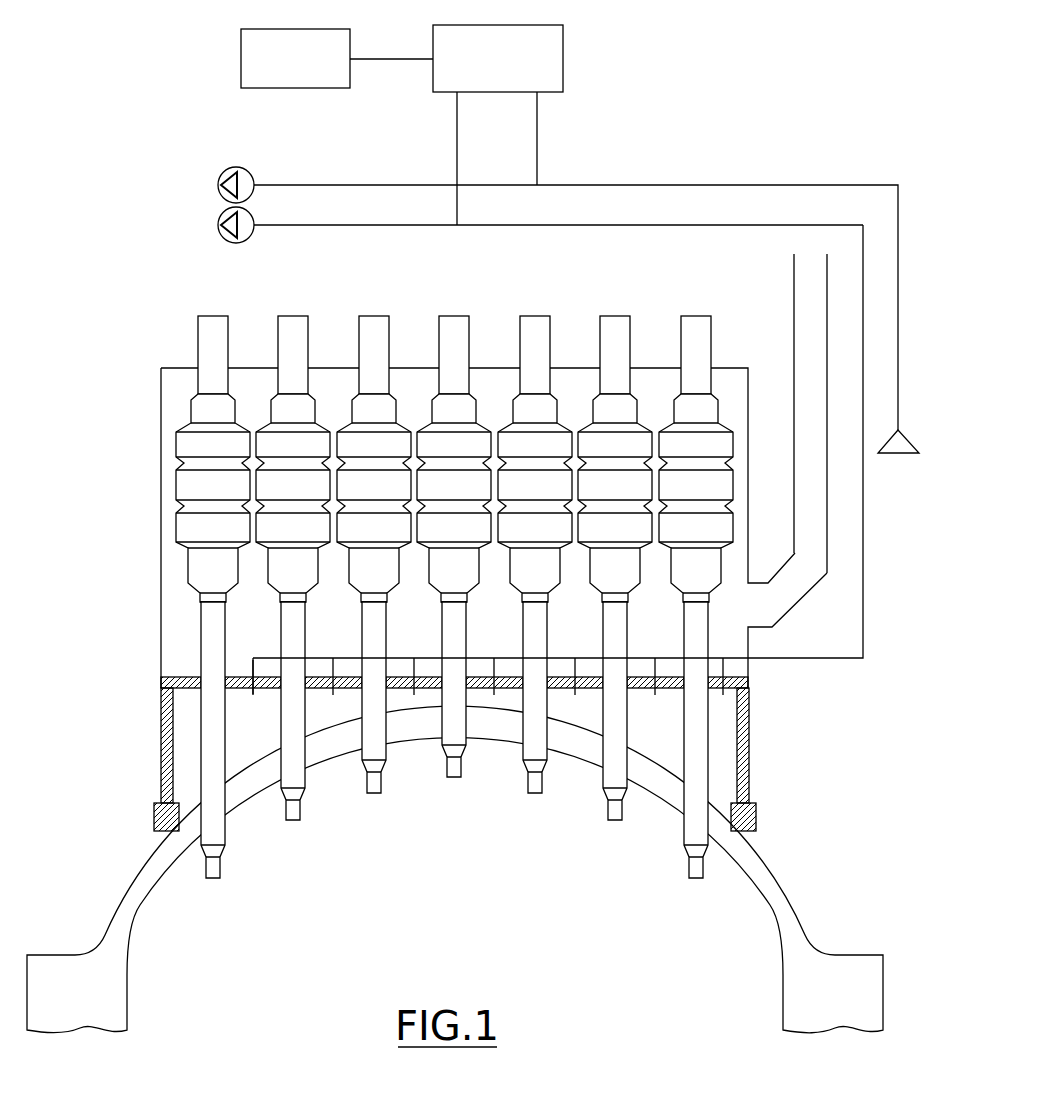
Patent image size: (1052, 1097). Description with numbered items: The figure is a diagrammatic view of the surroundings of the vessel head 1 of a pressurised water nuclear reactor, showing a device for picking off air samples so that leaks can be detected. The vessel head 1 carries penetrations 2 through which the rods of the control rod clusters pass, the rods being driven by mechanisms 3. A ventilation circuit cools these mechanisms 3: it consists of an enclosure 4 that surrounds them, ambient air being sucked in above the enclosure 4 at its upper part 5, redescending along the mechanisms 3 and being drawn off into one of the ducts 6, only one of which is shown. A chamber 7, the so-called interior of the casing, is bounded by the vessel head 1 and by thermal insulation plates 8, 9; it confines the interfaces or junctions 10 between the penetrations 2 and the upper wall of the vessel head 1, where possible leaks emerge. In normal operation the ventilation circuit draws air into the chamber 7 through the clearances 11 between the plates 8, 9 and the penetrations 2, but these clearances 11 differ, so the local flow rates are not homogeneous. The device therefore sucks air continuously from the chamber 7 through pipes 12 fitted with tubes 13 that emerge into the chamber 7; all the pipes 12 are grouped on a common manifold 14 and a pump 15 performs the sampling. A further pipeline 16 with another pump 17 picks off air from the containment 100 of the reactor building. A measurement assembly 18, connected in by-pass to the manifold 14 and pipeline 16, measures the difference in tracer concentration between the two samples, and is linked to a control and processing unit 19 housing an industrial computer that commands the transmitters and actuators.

The vessel head 1 is at (803, 888).
The penetrations 2 is at (296, 771).
The mechanisms 3 is at (173, 442).
The enclosure 4 is at (159, 543).
The upper part 5 is at (572, 390).
The ducts 6 is at (792, 315).
The chamber 7 is at (670, 755).
The thermal insulation plate 8 is at (159, 712).
The thermal insulation plate 9 is at (241, 660).
The interfaces or junctions 10 is at (198, 794).
The clearances 11 is at (191, 671).
The pipes 12 is at (404, 658).
The tubes 13 is at (484, 705).
The common manifold 14 is at (827, 662).
The pump 15 is at (214, 225).
The pipeline 16 is at (875, 182).
The pump 17 is at (214, 185).
The measurement assembly 18 is at (565, 59).
The control and processing unit 19 is at (239, 59).
The containment 100 is at (906, 457).